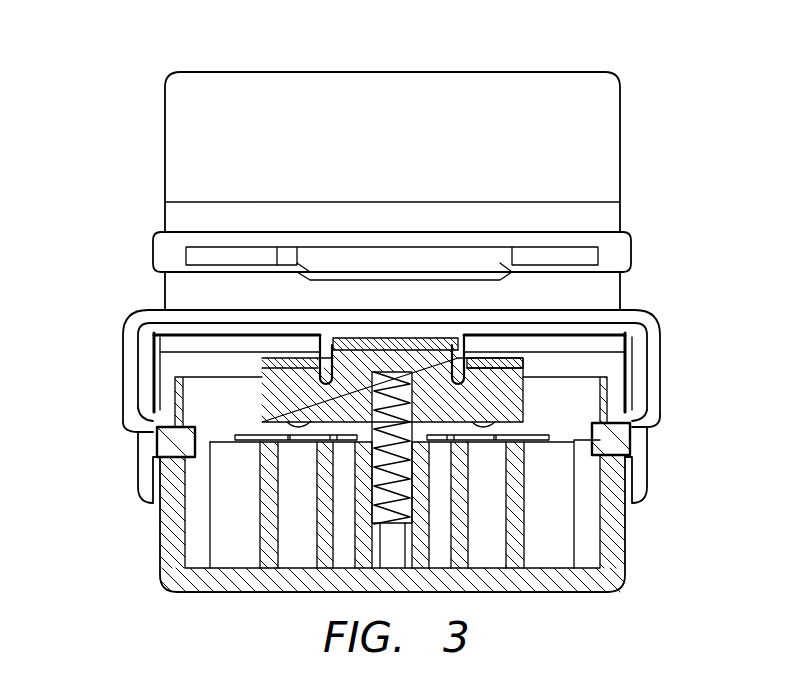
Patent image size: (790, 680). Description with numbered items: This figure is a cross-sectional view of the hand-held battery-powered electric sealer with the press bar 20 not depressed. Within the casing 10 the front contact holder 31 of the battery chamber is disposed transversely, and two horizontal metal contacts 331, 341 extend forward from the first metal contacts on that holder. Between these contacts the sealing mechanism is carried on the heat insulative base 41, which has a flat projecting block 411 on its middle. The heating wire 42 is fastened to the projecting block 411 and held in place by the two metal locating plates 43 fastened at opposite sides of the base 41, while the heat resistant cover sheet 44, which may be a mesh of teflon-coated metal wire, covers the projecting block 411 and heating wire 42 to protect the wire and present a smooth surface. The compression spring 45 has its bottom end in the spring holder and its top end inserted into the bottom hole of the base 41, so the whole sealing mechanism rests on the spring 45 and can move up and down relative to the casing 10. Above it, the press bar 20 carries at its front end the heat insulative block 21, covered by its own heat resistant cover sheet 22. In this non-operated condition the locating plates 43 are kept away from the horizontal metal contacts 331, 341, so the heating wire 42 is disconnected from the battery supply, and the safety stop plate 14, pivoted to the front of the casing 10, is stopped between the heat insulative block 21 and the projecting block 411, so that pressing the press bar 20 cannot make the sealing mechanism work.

The casing 10 is at (172, 541).
The safety stop plate 14 is at (138, 323).
The press bar 20 is at (506, 70).
The heat insulative block 21 is at (484, 258).
The heat resistant cover sheet 22 is at (620, 284).
The front contact holder 31 is at (518, 547).
The horizontal metal contact 331 is at (193, 430).
The horizontal metal contact 341 is at (537, 428).
The heat insulative base 41 is at (520, 406).
The projecting block 411 is at (453, 348).
The heating wire 42 is at (330, 363).
The metal locating plates 43 is at (260, 400).
The heat resistant cover sheet 44 is at (345, 338).
The compression spring 45 is at (410, 473).